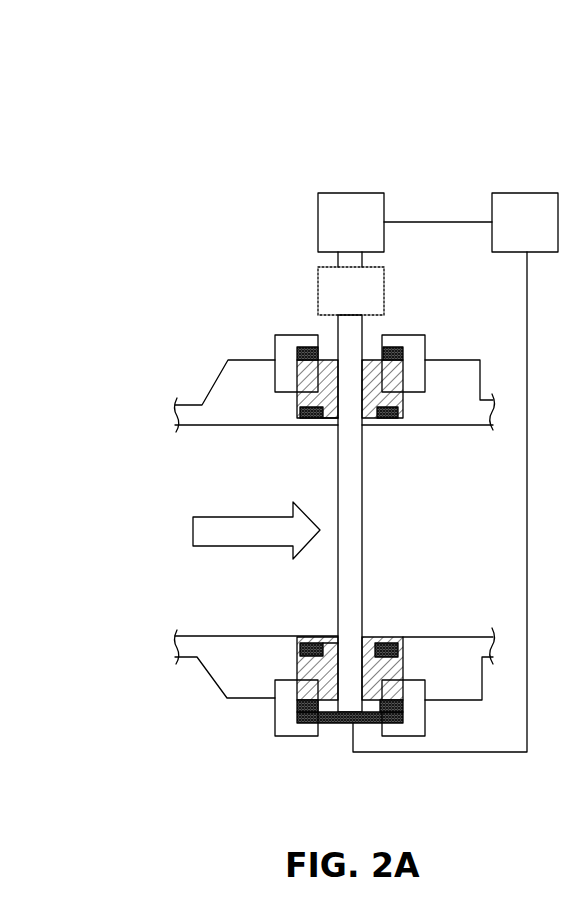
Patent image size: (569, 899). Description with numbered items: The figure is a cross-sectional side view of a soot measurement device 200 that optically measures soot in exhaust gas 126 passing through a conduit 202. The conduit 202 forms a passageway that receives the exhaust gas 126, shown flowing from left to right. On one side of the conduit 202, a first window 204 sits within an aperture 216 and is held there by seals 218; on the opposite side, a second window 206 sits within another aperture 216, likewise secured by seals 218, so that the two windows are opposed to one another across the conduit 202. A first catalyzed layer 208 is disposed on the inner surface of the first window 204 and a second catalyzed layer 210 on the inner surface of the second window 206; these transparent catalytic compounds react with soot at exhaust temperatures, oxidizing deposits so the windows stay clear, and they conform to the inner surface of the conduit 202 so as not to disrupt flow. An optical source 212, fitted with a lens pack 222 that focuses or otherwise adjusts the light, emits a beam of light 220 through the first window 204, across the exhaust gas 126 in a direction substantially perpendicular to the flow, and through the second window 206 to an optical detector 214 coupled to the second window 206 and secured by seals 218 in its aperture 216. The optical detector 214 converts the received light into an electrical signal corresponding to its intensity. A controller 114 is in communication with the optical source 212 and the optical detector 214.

The soot measurement device 200 is at (140, 58).
The optical source 212 is at (351, 222).
The controller 114 is at (525, 222).
The lens pack 222 is at (351, 291).
The beam of light 220 is at (350, 488).
The first window 204 is at (400, 392).
The second window 206 is at (397, 668).
The first catalyzed layer 208 is at (330, 425).
The second catalyzed layer 210 is at (330, 637).
The optical detector 214 is at (400, 719).
The aperture 216 is at (318, 341).
The seal 218 is at (393, 348).
The conduit 202 is at (197, 640).
The exhaust gas 126 is at (240, 517).